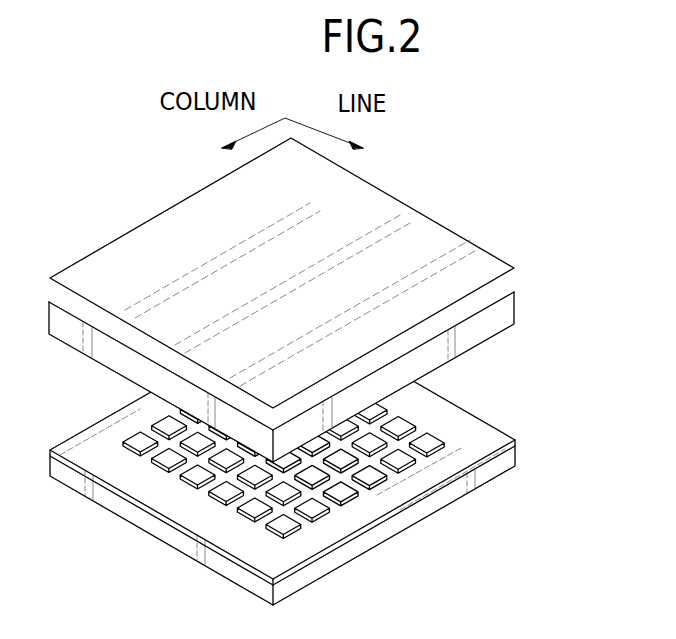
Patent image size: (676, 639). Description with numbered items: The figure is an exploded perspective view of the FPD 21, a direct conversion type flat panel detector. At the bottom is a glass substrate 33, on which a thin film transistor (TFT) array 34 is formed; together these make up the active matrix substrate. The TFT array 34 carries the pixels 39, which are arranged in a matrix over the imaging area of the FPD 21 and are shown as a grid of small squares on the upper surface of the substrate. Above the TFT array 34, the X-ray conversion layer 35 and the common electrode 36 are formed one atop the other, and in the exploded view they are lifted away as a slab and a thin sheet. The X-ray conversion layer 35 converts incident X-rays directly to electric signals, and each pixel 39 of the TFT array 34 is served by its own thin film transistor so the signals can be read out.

The FPD 21 is at (419, 197).
The glass substrate 33 is at (483, 473).
The TFT array 34 is at (472, 428).
The X-ray conversion layer 35 is at (490, 318).
The common electrode 36 is at (443, 261).
The pixels 39 is at (337, 487).